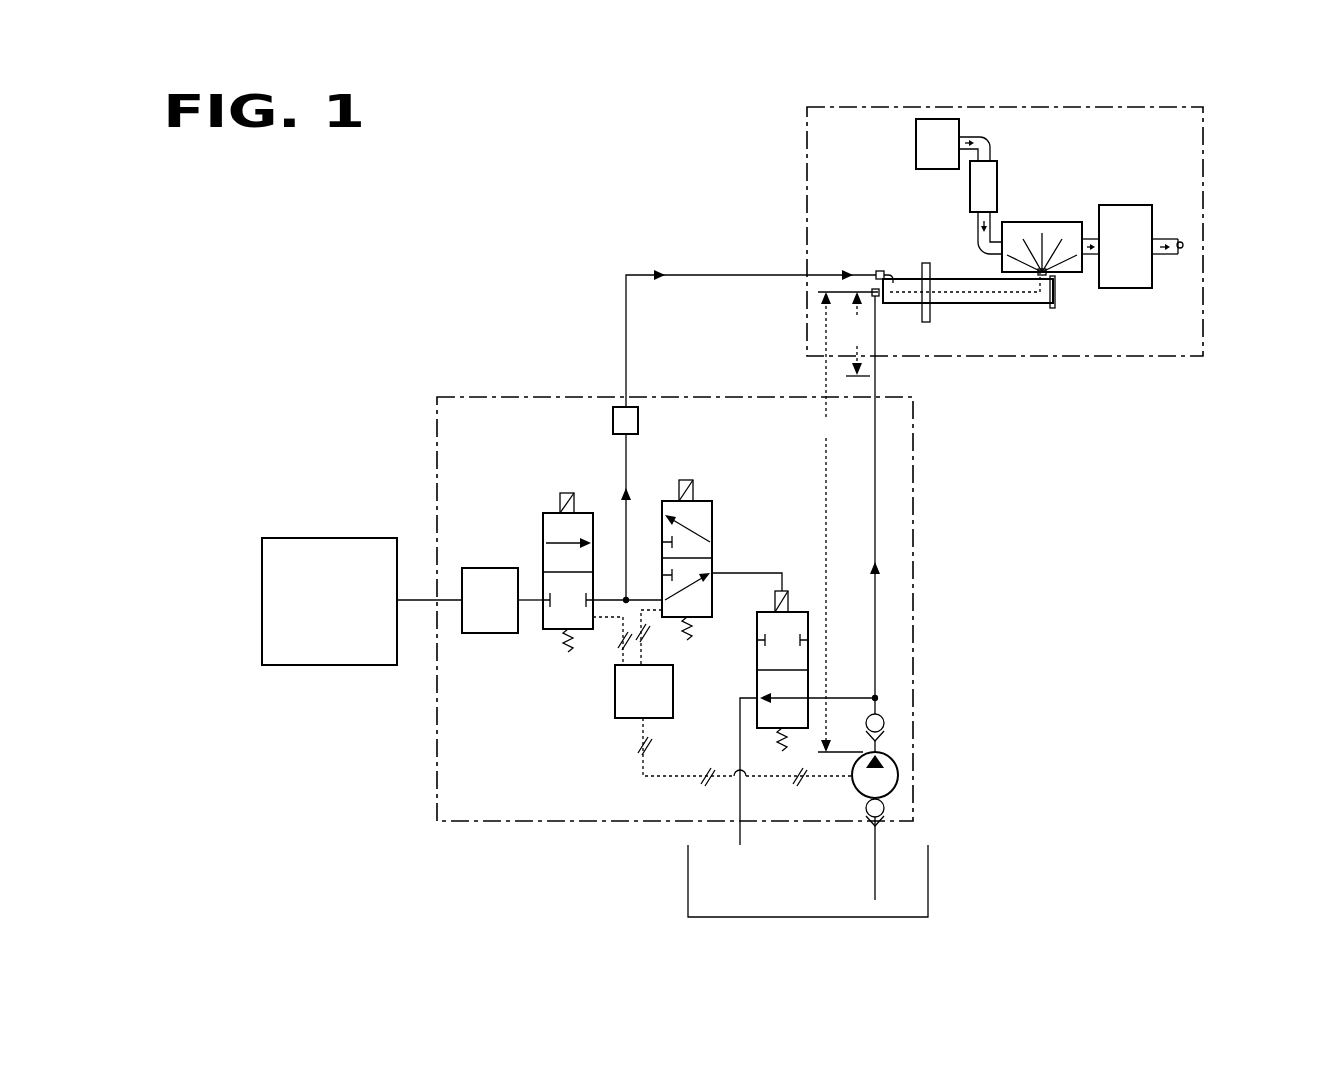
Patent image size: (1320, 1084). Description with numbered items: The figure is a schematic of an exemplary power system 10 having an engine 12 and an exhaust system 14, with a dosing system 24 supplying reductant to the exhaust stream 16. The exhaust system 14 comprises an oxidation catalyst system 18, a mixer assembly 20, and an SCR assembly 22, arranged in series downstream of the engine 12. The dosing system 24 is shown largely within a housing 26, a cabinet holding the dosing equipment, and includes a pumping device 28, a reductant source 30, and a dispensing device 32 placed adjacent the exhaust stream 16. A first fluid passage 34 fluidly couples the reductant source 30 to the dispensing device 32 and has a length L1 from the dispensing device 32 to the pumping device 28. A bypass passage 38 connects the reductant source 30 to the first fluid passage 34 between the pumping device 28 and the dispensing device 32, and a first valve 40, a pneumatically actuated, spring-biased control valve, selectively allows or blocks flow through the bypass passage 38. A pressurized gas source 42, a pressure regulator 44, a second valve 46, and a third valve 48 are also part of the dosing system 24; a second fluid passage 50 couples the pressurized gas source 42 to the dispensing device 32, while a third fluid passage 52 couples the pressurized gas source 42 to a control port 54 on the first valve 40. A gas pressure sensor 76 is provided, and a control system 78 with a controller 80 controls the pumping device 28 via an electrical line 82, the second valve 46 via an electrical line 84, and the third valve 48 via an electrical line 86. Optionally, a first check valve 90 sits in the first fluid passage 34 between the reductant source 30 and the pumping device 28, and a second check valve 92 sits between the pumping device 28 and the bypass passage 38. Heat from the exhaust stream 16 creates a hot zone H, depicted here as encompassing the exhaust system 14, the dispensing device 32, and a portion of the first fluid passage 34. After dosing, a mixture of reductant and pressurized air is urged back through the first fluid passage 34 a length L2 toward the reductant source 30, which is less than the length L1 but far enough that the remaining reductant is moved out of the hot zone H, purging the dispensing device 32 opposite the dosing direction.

The power system 10 is at (480, 295).
The engine 12 is at (926, 157).
The exhaust system 14 is at (1065, 401).
The exhaust stream 16 is at (975, 133).
The oxidation catalyst system 18 is at (994, 198).
The mixer assembly 20 is at (1052, 222).
The SCR assembly 22 is at (1114, 259).
The dosing system 24 is at (1025, 617).
The housing 26 is at (913, 468).
The pumping device 28 is at (905, 773).
The reductant source 30 is at (930, 886).
The dispensing device 32 is at (968, 304).
The first fluid passage 34 is at (875, 438).
The bypass passage 38 is at (735, 797).
The first valve 40 is at (757, 678).
The pressurized gas source 42 is at (316, 612).
The pressure regulator 44 is at (478, 612).
The second valve 46 is at (545, 530).
The third valve 48 is at (712, 510).
The second fluid passage 50 is at (735, 273).
The third fluid passage 52 is at (735, 573).
The control port 54 is at (788, 596).
The gas pressure sensor 76 is at (613, 421).
The control system 78 is at (575, 698).
The controller 80 is at (632, 703).
The electrical line 82 is at (655, 763).
The electrical line 84 is at (618, 651).
The electrical line 86 is at (660, 653).
The first check valve 90 is at (900, 812).
The second check valve 92 is at (895, 722).
The hot zone H is at (805, 172).
The length L1 is at (839, 522).
The length L2 is at (858, 334).